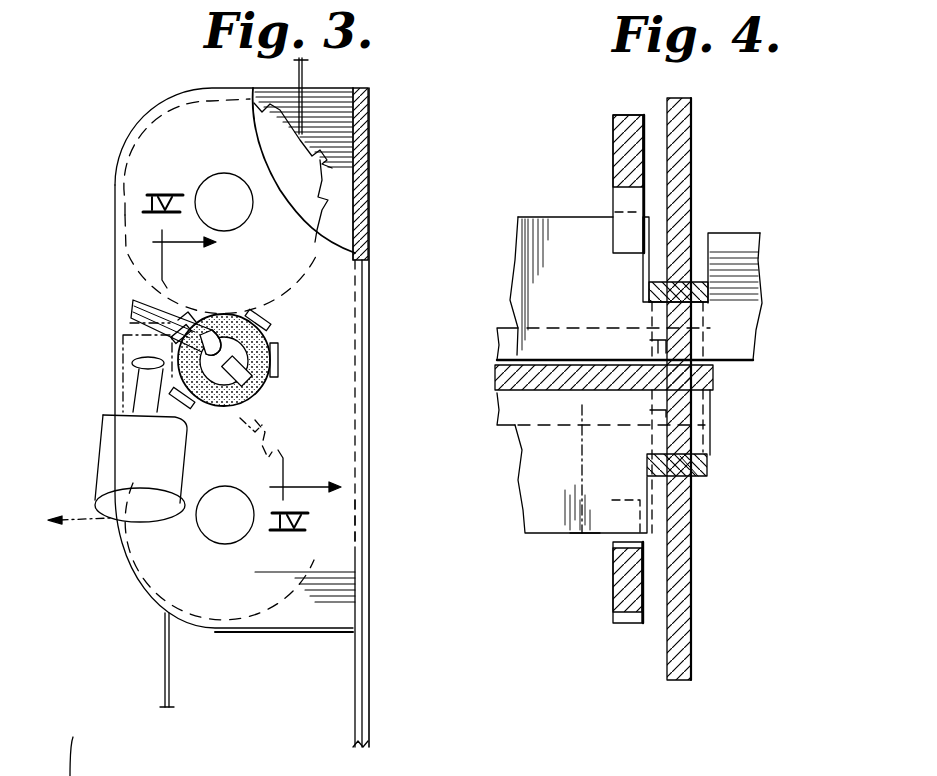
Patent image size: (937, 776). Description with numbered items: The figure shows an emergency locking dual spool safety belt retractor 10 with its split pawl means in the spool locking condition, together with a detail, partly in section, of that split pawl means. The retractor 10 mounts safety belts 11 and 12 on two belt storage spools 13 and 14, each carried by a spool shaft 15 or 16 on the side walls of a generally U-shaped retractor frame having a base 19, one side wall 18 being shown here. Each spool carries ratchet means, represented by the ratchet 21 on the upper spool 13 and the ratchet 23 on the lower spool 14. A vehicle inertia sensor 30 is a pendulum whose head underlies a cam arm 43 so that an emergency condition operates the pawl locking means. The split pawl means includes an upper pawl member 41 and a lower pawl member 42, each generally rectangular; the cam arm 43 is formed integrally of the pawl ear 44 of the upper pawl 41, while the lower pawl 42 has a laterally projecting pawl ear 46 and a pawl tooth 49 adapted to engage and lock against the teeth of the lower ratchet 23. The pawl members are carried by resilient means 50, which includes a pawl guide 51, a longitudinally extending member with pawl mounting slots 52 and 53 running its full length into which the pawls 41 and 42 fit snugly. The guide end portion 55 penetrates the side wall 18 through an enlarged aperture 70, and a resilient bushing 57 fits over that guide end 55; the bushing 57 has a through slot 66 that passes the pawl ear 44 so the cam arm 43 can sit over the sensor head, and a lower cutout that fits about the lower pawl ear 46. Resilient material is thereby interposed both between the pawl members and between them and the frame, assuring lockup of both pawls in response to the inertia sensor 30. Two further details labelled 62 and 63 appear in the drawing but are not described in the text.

In FIG. 3, the emergency locking dual spool safety belt retractor 10 is at (118, 128).
In FIG. 3, the safety belt 11 is at (305, 62).
In FIG. 3, the safety belt 12 is at (170, 688).
In FIG. 3, the belt storage spool 13 is at (322, 168).
In FIG. 3, the belt storage spool 14 is at (295, 584).
In FIG. 3, the spool shaft 15 is at (221, 182).
In FIG. 3, the spool shaft 16 is at (214, 527).
In FIG. 3, the side wall 18 is at (310, 612).
In FIG. 4, the side wall 18 is at (686, 130).
In FIG. 3, the base 19 is at (369, 236).
In FIG. 3, the ratchet 21 is at (323, 216).
In FIG. 4, the ratchet 21 is at (626, 140).
In FIG. 3, the ratchet 23 is at (366, 524).
In FIG. 4, the ratchet 23 is at (630, 618).
In FIG. 3, the vehicle inertia sensor 30 is at (106, 528).
In FIG. 3, the pawl member 41 is at (193, 293).
In FIG. 4, the pawl member 41 is at (558, 242).
In FIG. 3, the pawl member 42 is at (262, 418).
In FIG. 4, the pawl member 42 is at (560, 500).
In FIG. 3, the cam arm 43 is at (147, 298).
In FIG. 4, the cam arm 43 is at (735, 242).
In FIG. 3, the pawl ear 44 is at (220, 340).
In FIG. 4, the pawl ear 44 is at (740, 337).
In FIG. 3, the pawl ear 46 is at (268, 375).
In FIG. 4, the pawl ear 46 is at (690, 436).
In FIG. 3, the pawl tooth 49 is at (250, 420).
In FIG. 4, the pawl tooth 49 is at (588, 536).
In FIG. 3, the resilient means 50 is at (297, 330).
In FIG. 3, the pawl guide 51 is at (246, 346).
In FIG. 4, the pawl guide 51 is at (503, 428).
In FIG. 4, the pawl mounting slot 52 is at (508, 334).
In FIG. 4, the pawl mounting slot 53 is at (500, 403).
In FIG. 4, the guide end portion 55 is at (718, 382).
In FIG. 4, the resilient bushing 57 is at (707, 462).
In FIG. 3, the drive bracket 62 is at (170, 342).
In FIG. 3, the bore 63 is at (290, 363).
In FIG. 4, the bore 63 is at (650, 348).
In FIG. 4, the through slot 66 is at (660, 306).
In FIG. 4, the aperture 70 is at (698, 478).